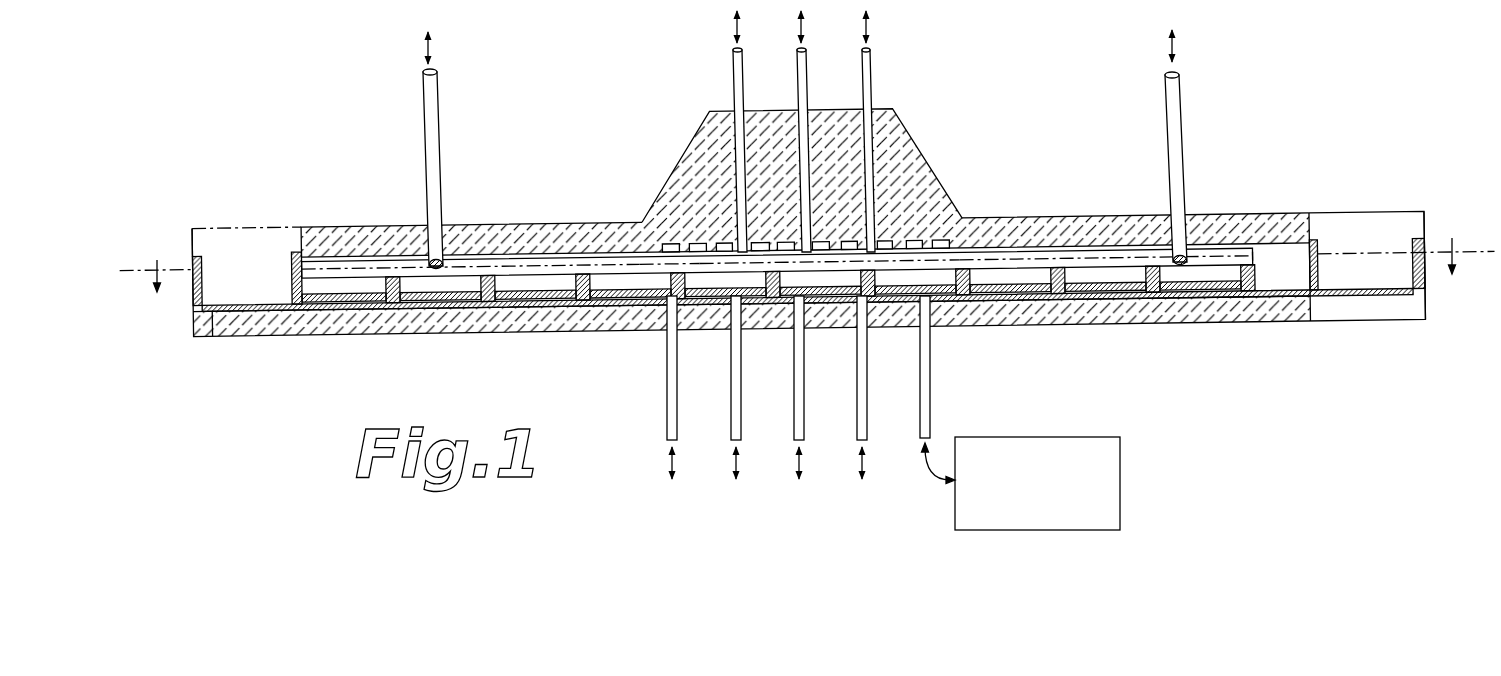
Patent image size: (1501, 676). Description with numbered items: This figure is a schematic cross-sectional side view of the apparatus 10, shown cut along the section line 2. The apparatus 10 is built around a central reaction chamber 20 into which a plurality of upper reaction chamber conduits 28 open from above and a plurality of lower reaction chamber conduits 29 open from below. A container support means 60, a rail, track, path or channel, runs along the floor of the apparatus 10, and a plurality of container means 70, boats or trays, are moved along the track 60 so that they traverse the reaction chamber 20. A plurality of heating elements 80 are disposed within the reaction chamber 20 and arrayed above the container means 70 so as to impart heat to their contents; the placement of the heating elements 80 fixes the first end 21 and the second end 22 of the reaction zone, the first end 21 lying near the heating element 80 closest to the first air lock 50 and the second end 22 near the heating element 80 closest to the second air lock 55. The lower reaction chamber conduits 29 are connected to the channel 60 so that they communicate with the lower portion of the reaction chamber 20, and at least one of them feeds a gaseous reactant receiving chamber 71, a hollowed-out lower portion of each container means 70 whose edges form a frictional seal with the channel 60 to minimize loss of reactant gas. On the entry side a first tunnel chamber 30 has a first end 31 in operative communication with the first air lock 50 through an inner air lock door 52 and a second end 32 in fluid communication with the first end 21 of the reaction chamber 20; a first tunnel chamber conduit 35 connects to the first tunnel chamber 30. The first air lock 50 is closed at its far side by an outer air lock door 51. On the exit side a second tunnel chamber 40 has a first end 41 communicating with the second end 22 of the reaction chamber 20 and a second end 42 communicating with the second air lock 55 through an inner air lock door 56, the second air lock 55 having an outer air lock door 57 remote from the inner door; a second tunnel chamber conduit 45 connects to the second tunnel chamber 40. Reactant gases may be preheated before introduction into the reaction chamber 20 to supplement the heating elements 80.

The section line 2- 2 is at (807, 278).
The apparatus 10 is at (987, 97).
The reaction chamber 20 is at (961, 215).
The first end of reaction chamber 21 is at (660, 270).
The second end of reaction chamber 22 is at (937, 266).
The upper reaction chamber conduits 28 is at (735, 72).
The lower reaction chamber conduits 29 is at (793, 415).
The first tunnel chamber 30 is at (529, 242).
The first end of first tunnel chamber 31 is at (334, 262).
The second end of first tunnel chamber 32 is at (658, 262).
The first tunnel chamber conduit 35 is at (434, 150).
The second tunnel chamber 40 is at (1108, 257).
The first end of second tunnel chamber 41 is at (997, 260).
The second end of second tunnel chamber 42 is at (1303, 264).
The second tunnel chamber conduit 45 is at (1185, 147).
The first air lock 50 is at (238, 240).
The outer air lock door 51 is at (197, 258).
The inner air lock door 52 is at (292, 255).
The second air lock 55 is at (1373, 232).
The inner air lock door 56 is at (1318, 246).
The outer air lock door 57 is at (1426, 240).
The container support means 60 is at (531, 296).
The container means 70 is at (477, 292).
The gaseous reactant receiving chamber 71 is at (427, 303).
The heating elements 80 is at (920, 243).